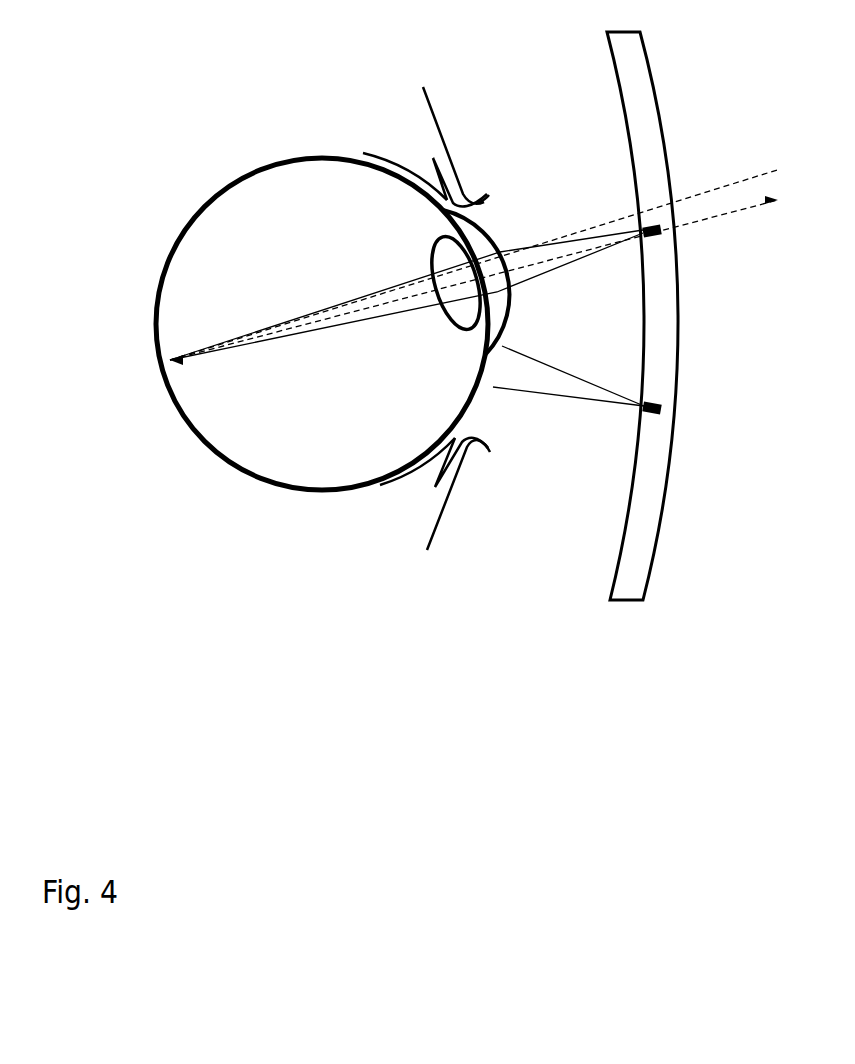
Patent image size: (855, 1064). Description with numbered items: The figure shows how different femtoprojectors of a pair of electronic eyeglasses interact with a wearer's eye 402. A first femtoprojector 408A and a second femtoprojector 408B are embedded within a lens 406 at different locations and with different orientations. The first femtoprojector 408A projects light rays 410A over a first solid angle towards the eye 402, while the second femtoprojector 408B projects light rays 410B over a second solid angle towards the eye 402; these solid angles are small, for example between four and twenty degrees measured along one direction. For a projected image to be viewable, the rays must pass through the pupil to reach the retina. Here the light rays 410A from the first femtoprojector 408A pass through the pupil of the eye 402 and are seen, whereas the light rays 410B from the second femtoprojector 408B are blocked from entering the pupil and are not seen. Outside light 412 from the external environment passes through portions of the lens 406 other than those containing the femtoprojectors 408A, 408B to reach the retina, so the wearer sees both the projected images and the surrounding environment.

The eye 402 is at (340, 422).
The lens 406 is at (645, 548).
The first femtoprojector 408A is at (655, 236).
The second femtoprojector 408B is at (655, 401).
The light rays 410A is at (557, 270).
The light rays 410B is at (537, 398).
The outside light 412 is at (698, 195).